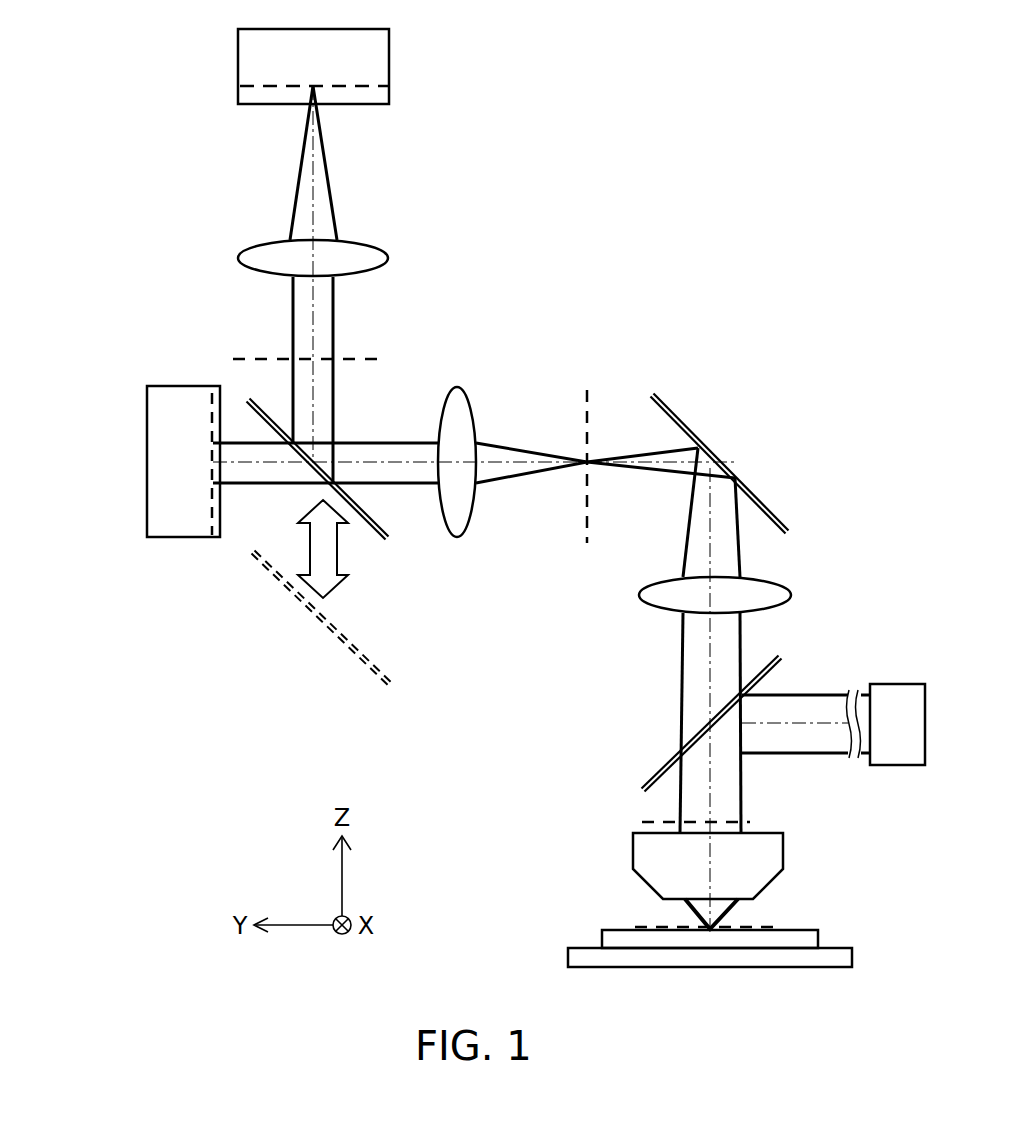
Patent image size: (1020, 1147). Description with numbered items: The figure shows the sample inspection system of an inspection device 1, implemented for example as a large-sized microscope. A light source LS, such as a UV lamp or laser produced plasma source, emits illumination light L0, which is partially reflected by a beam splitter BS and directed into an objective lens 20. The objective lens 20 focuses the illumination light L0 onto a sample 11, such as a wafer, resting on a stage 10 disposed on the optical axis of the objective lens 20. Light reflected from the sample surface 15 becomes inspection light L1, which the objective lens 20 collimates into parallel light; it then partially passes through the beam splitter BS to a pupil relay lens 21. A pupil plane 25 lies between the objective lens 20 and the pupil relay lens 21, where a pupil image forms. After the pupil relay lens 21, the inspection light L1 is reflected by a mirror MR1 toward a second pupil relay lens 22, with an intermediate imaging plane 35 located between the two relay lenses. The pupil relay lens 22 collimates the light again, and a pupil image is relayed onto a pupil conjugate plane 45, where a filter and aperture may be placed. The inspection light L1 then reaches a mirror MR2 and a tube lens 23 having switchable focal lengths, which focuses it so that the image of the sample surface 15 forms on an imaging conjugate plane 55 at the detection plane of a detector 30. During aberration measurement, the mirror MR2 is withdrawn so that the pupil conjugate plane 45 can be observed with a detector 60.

The inspection device 1 is at (93, 102).
The stage 10 is at (568, 957).
The sample 11 is at (820, 940).
The sample surface 15 is at (778, 925).
The objective lens 20 is at (785, 850).
The pupil relay lens 21 is at (792, 595).
The pupil relay lens 22 is at (452, 388).
The tube lens 23 is at (389, 256).
The pupil plane 25 is at (760, 818).
The detector 30 is at (389, 46).
The intermediate imaging plane 35 is at (592, 388).
The pupil conjugate plane 45 is at (380, 358).
The imaging conjugate plane 55 is at (397, 88).
The detector 60 is at (158, 386).
The mirror MR1 is at (672, 404).
The mirror MR2 is at (388, 540).
The beam splitter BS is at (658, 775).
The light source LS is at (897, 724).
The illumination light L0 is at (812, 691).
The inspection light L1 is at (395, 449).